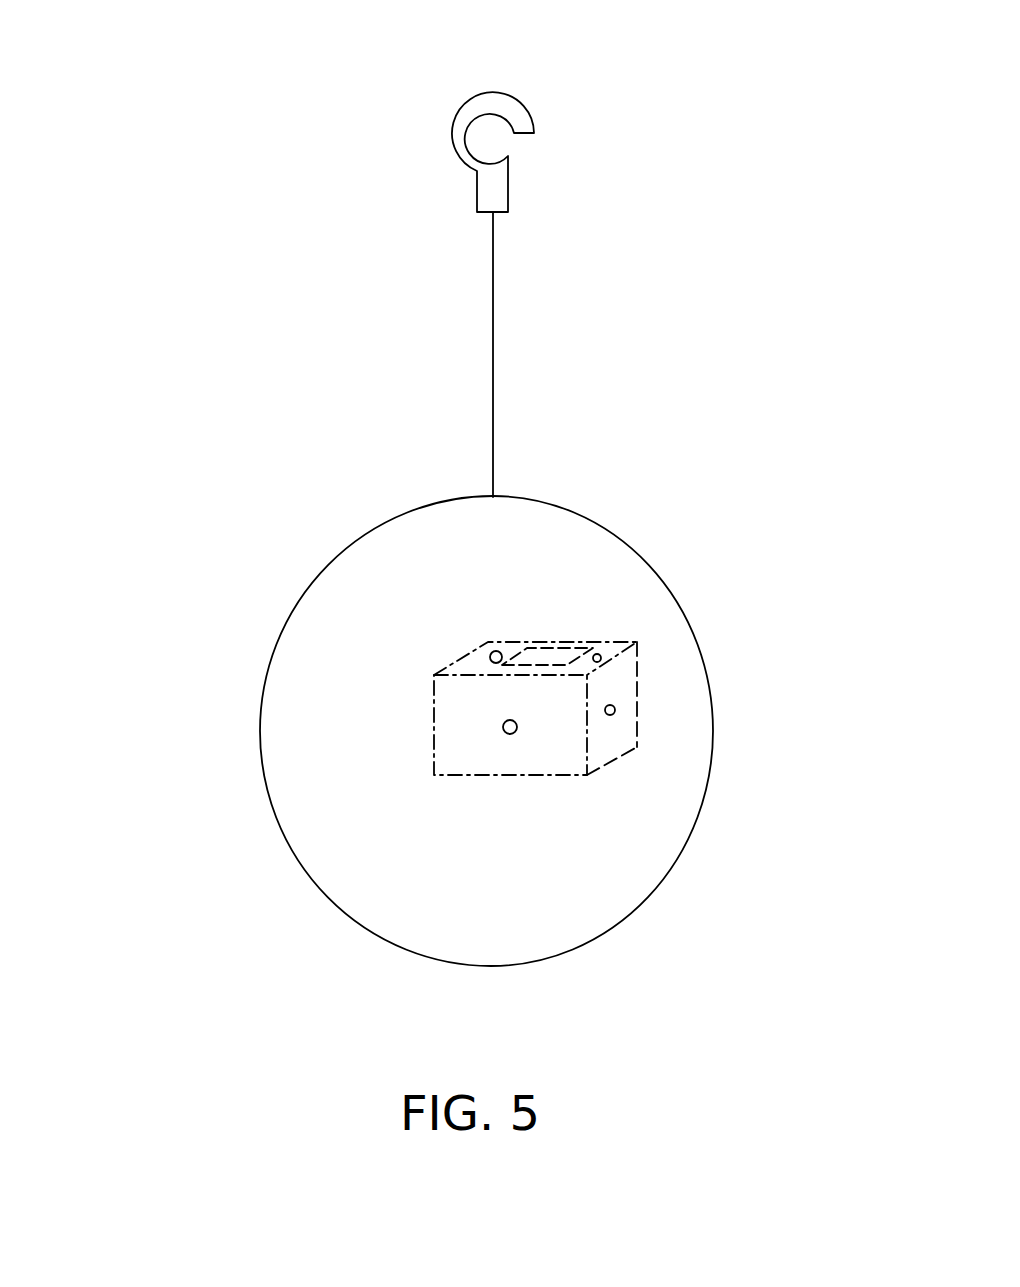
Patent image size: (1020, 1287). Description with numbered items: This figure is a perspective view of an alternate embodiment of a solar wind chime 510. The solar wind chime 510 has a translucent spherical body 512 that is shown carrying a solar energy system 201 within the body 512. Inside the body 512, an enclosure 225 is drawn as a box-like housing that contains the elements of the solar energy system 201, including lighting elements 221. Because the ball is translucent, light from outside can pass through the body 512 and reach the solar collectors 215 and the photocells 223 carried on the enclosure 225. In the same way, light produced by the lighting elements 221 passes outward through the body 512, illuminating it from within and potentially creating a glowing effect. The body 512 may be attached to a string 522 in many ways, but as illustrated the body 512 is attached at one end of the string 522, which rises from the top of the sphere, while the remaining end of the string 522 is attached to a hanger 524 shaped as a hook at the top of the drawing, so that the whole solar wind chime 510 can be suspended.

The solar wind chime 510 is at (172, 428).
The translucent spherical body 512 is at (653, 897).
The string 522 is at (497, 320).
The hanger 524 is at (520, 105).
The solar energy system 201 is at (455, 732).
The solar collectors 215 is at (569, 641).
The lighting elements 221 is at (600, 660).
The photocells 223 is at (498, 655).
The enclosure 225 is at (637, 705).